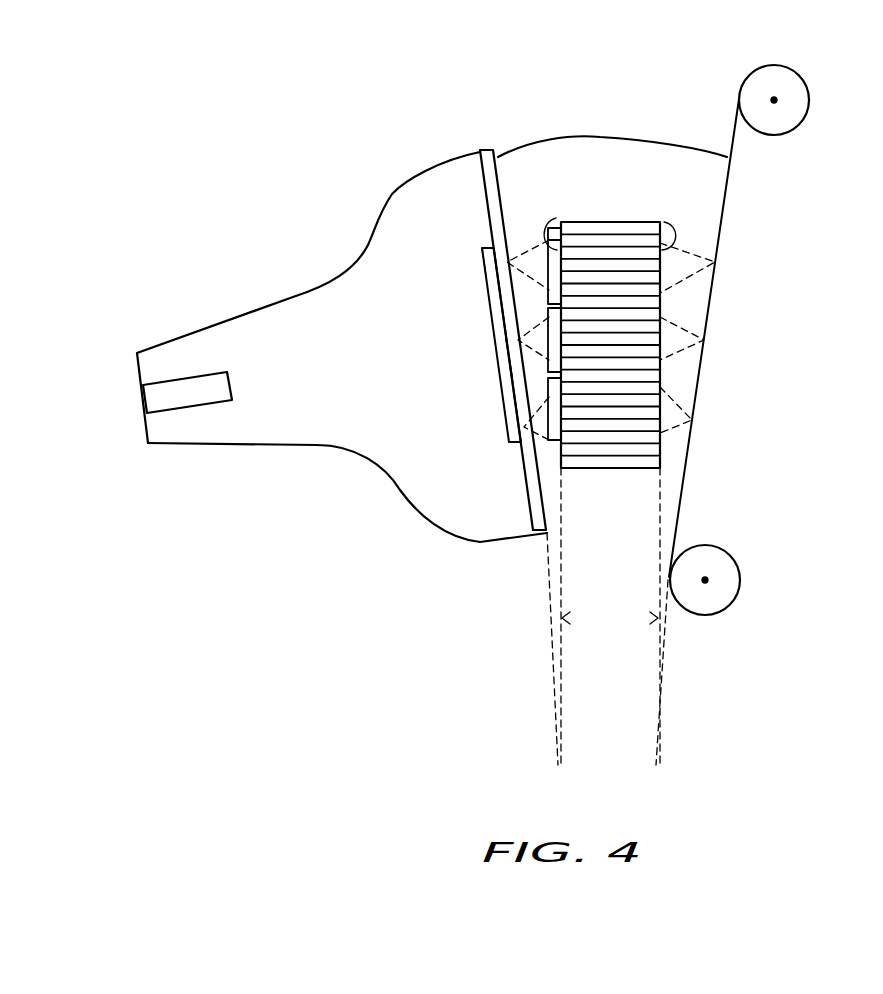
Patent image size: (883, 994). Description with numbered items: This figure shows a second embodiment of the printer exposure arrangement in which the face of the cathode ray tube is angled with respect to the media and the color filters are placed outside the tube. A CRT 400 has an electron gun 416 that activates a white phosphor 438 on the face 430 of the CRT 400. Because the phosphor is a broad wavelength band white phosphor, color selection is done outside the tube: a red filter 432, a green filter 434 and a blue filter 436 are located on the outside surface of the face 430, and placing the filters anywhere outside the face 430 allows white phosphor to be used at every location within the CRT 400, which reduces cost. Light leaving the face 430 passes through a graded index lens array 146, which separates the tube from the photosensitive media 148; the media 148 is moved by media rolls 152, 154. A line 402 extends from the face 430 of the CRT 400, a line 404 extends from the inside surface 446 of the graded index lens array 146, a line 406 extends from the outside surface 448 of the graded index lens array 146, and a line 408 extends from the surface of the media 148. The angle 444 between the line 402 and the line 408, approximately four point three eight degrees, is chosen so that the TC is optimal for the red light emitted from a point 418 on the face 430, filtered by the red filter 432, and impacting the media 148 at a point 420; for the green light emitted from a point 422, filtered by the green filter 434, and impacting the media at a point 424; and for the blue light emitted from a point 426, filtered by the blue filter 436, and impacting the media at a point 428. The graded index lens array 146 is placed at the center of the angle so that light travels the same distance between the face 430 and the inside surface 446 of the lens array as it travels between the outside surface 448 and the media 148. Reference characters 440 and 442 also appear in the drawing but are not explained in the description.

The CRT 400 is at (376, 212).
The electron gun 416 is at (231, 378).
The point on the surface of the CRT face 418 is at (482, 252).
The point on the media 420 is at (716, 262).
The point on the surface of the CRT face 422 is at (547, 346).
The point on the media 424 is at (704, 340).
The point on the surface of the CRT face 426 is at (548, 428).
The point on the media 428 is at (692, 420).
The face of the CRT 430 is at (494, 150).
The red filter 432 is at (549, 268).
The green filter 434 is at (510, 370).
The blue filter 436 is at (514, 443).
The white phosphor 438 is at (489, 292).
The stack width region 440 is at (662, 543).
The upper edge of window plate 442 is at (484, 180).
The angle 444 is at (606, 135).
The inside surface of the graded index lens array 446 is at (559, 218).
The outside surface of the graded index lens array 448 is at (662, 248).
The graded index lens array 146 is at (598, 222).
The photosensitive media 148 is at (714, 284).
The media roll 152 is at (733, 557).
The media roll 154 is at (801, 79).
The line 402 is at (543, 626).
The line 404 is at (562, 618).
The line 406 is at (658, 618).
The line 408 is at (676, 628).